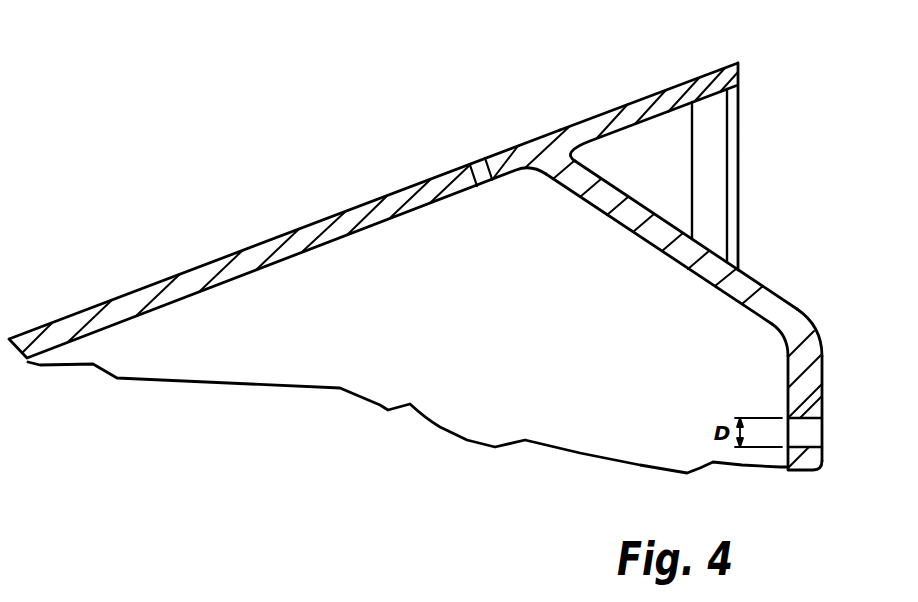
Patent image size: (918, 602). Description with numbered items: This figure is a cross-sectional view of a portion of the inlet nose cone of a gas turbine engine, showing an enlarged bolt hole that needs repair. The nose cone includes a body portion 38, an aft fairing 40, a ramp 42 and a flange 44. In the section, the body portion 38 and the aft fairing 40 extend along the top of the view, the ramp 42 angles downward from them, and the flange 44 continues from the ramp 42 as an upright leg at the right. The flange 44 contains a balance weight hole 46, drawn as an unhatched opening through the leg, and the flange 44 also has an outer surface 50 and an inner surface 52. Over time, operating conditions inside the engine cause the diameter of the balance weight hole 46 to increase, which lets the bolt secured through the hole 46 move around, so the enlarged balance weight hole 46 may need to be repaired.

The body portion 38 is at (310, 238).
The aft fairing 40 is at (672, 96).
The ramp 42 is at (648, 228).
The flange 44 is at (832, 345).
The balance weight hole 46 is at (808, 438).
The outer surface 50 is at (823, 391).
The inner surface 52 is at (788, 356).